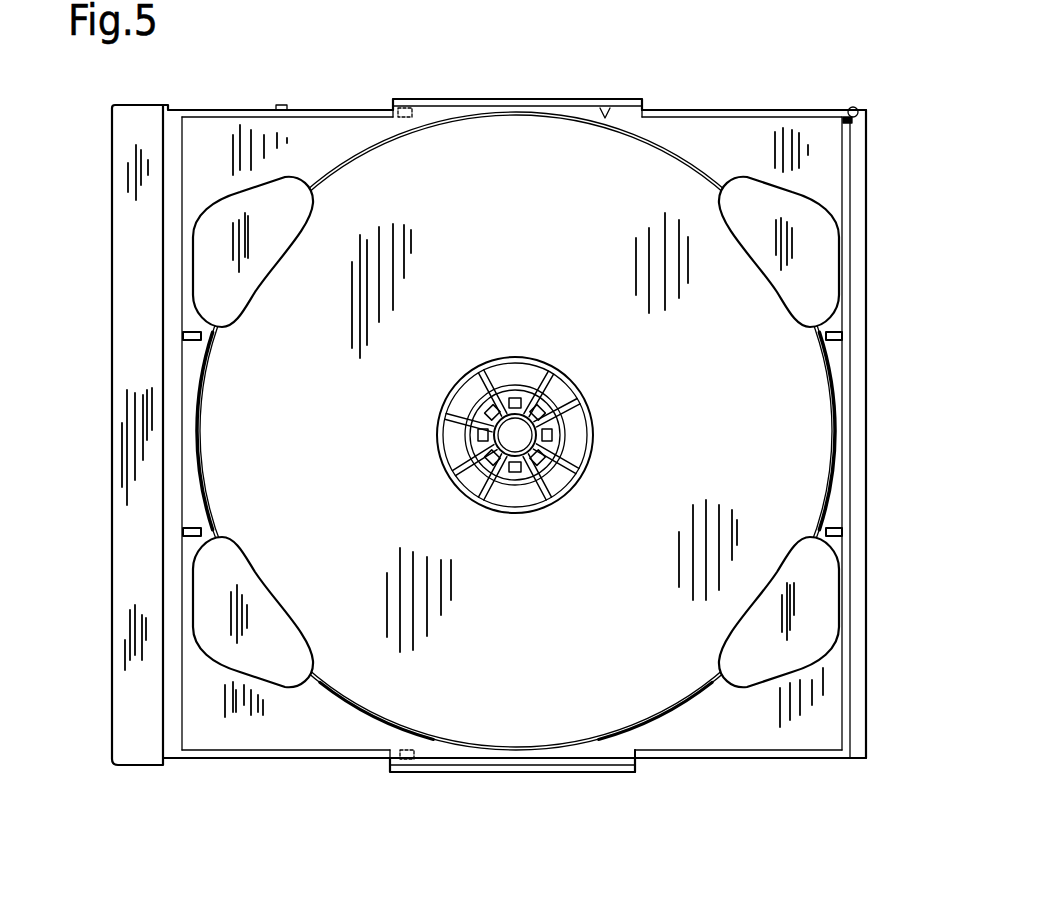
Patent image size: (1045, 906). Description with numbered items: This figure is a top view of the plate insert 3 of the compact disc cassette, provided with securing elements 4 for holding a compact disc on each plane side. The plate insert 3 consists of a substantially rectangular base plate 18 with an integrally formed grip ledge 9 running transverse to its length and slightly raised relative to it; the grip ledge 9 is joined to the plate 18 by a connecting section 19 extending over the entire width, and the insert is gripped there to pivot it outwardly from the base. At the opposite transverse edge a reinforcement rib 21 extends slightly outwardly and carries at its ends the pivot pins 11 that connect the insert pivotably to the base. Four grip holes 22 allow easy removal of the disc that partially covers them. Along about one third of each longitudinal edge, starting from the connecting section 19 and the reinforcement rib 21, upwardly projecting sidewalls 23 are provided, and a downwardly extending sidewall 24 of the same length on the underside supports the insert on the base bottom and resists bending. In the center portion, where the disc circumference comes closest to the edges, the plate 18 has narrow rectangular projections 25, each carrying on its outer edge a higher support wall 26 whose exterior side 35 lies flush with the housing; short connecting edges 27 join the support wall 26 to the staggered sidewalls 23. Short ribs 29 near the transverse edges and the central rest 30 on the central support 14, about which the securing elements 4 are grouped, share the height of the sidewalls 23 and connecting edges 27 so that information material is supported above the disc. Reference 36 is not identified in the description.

The plate insert 3 is at (179, 768).
The securing elements 4 is at (545, 432).
The grip ledge 9 is at (138, 573).
The pivot pins 11 is at (857, 106).
The central support 14 is at (515, 446).
The base plate 18 is at (243, 752).
The connecting section 19 is at (176, 148).
The reinforcement rib 21 is at (846, 162).
The grip holes 22 is at (783, 208).
The upwardly projecting sidewalls 23 is at (741, 110).
The sidewall 24 is at (727, 0).
The rectangular projections 25 is at (438, 110).
The support wall 26 is at (574, 110).
The connecting edges 27 is at (636, 768).
The short ribs 29 is at (182, 334).
The central rest 30 is at (480, 440).
The exterior side 35 is at (503, 90).
The notch 36 is at (608, 110).